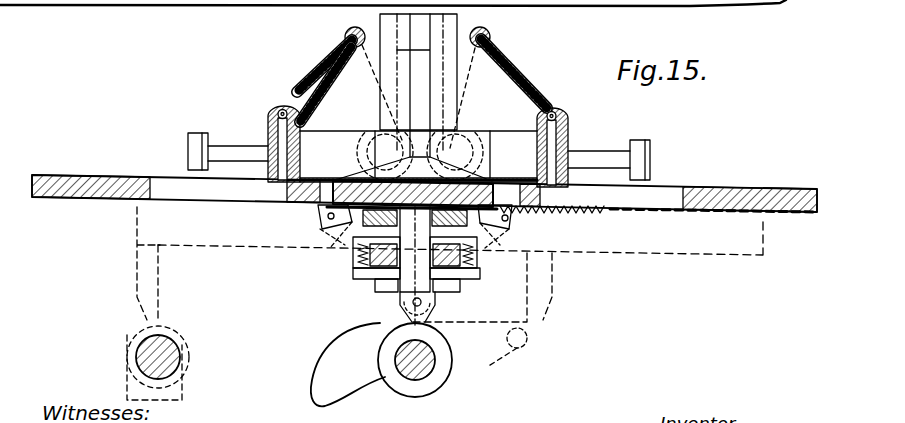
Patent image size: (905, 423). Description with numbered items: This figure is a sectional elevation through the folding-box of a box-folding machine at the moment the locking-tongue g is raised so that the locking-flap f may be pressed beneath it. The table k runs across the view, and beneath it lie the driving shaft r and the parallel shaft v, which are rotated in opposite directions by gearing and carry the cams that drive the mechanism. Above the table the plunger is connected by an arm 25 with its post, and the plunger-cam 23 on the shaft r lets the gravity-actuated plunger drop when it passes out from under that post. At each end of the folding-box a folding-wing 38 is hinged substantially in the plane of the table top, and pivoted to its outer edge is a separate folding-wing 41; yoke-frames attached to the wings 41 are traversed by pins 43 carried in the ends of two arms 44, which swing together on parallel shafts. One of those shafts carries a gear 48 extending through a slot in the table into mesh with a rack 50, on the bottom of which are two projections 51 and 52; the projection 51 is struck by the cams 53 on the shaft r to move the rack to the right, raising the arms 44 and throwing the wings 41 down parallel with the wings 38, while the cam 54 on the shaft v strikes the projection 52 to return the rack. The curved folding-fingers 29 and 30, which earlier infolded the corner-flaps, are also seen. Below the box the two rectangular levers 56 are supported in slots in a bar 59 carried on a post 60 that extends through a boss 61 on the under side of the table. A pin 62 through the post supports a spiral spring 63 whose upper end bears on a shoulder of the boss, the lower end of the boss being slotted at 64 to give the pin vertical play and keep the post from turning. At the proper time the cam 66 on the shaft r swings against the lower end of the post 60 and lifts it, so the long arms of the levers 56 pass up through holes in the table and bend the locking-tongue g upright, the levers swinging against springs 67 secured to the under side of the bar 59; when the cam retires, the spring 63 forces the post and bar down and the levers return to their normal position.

The table k is at (741, 184).
The arm 25 is at (418, 42).
The gear 48 is at (421, 107).
The arms 44 is at (343, 25).
The pins 43 is at (330, 50).
The folding-wing 38 is at (262, 130).
The folding-wing 41 is at (302, 124).
The folding-finger 30 is at (188, 147).
The folding-finger 29 is at (652, 154).
The locking-tongue g is at (487, 140).
The locking-flap f is at (409, 153).
The bar 59 is at (313, 219).
The rectangular levers 56 is at (325, 232).
The springs 67 is at (342, 235).
The pin 62 is at (353, 270).
The spiral spring 63 is at (470, 263).
The post 60 is at (373, 280).
The boss 61 is at (462, 289).
The slot 64 is at (403, 293).
The cam 66 is at (427, 318).
The plunger-cam 23 is at (320, 353).
The shaft r is at (414, 370).
The projection 52 is at (160, 282).
The rack 50 is at (662, 248).
The projection 51 is at (553, 310).
The cams 53 is at (457, 380).
The shaft v is at (141, 357).
The cam 54 is at (183, 387).